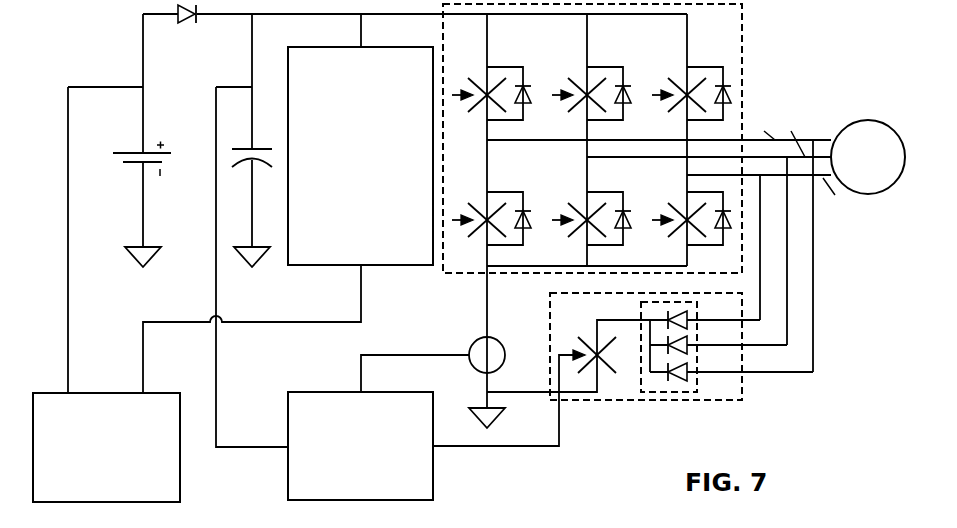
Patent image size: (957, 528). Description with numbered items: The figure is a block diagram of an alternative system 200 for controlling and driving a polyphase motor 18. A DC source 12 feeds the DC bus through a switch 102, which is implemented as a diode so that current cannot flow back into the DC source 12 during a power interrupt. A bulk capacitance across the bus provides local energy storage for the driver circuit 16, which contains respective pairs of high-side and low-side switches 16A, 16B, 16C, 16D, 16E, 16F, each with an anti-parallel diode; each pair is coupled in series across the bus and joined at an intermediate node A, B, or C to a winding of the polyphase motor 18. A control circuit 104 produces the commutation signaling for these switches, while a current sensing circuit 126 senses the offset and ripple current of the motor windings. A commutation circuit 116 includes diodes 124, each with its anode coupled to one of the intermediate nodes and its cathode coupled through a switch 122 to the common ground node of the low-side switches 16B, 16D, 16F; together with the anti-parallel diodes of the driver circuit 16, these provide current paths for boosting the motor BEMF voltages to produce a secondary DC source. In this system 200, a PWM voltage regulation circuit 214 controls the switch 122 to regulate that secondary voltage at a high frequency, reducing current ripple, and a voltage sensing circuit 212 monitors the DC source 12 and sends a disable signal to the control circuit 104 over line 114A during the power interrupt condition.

The system 200 is at (457, 230).
The switch 102 is at (188, 26).
The DC source 12 is at (142, 140).
The control circuit 104 is at (360, 156).
The line 114A is at (252, 329).
The voltage sensing circuit 212 is at (106, 447).
The PWM voltage regulation circuit 214 is at (360, 446).
The current sensing circuit 126 is at (500, 345).
The driver circuit 16 is at (607, 138).
The high-side switch 16A is at (487, 91).
The low-side switch 16B is at (487, 215).
The high-side switch 16C is at (587, 91).
The low-side switch 16D is at (587, 215).
The high-side switch 16E is at (687, 91).
The low-side switch 16F is at (687, 215).
The polyphase motor 18 is at (863, 145).
The commutation circuit 116 is at (646, 346).
The switch 122 is at (603, 364).
The diodes 124 is at (727, 347).